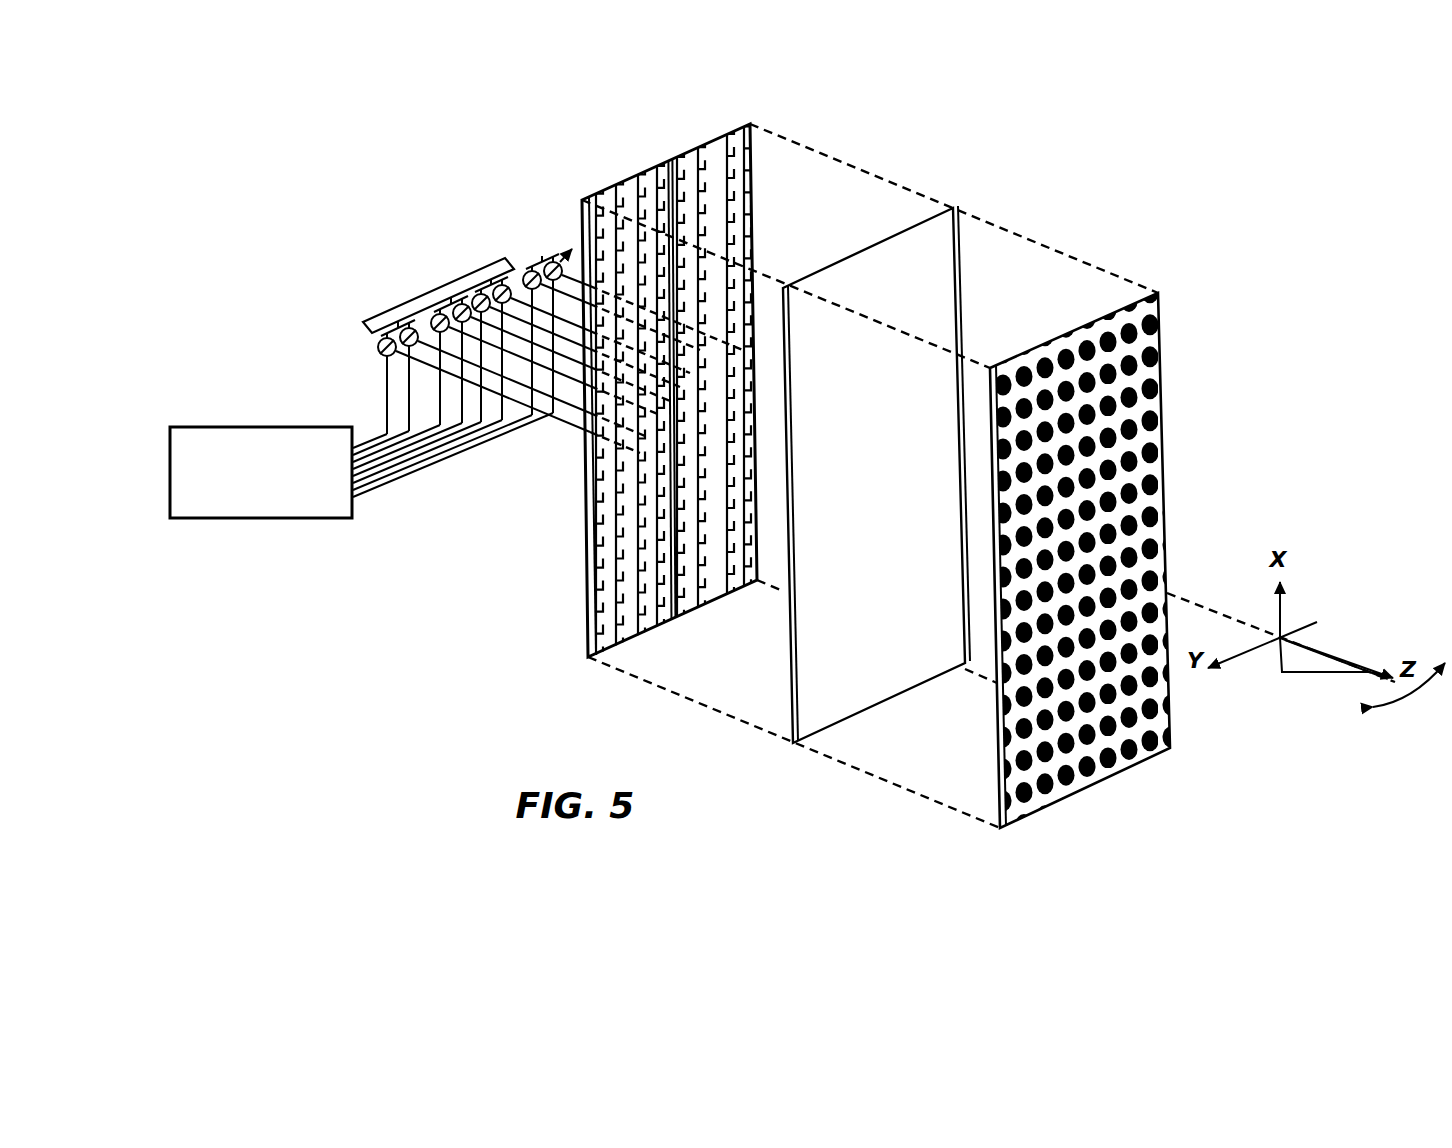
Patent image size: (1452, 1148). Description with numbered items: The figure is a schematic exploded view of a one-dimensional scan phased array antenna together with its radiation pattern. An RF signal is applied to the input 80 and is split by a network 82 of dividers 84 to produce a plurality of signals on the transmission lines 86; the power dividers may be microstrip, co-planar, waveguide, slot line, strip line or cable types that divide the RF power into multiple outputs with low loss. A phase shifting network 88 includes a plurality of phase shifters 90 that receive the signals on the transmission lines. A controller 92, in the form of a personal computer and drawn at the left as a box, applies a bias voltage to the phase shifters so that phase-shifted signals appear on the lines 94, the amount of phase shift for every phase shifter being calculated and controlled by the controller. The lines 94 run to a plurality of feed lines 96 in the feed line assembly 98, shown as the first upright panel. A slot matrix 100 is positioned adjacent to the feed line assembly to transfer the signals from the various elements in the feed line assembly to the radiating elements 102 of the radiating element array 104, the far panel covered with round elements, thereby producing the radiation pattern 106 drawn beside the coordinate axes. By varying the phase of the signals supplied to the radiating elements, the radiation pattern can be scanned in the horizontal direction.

The input 80 is at (409, 300).
The network of dividers 82 is at (477, 222).
The dividers 84 is at (375, 322).
The transmission lines 86 is at (530, 270).
The phase shifting network 88 is at (352, 352).
The phase shifters 90 is at (372, 350).
The controller 92 is at (258, 518).
The lines 94 is at (570, 428).
The feed lines 96 is at (650, 545).
The feed line assembly 98 is at (675, 158).
The slot matrix 100 is at (897, 234).
The radiating elements 102 is at (1163, 403).
The radiating element array 104 is at (1200, 318).
The radiation pattern 106 is at (1335, 652).